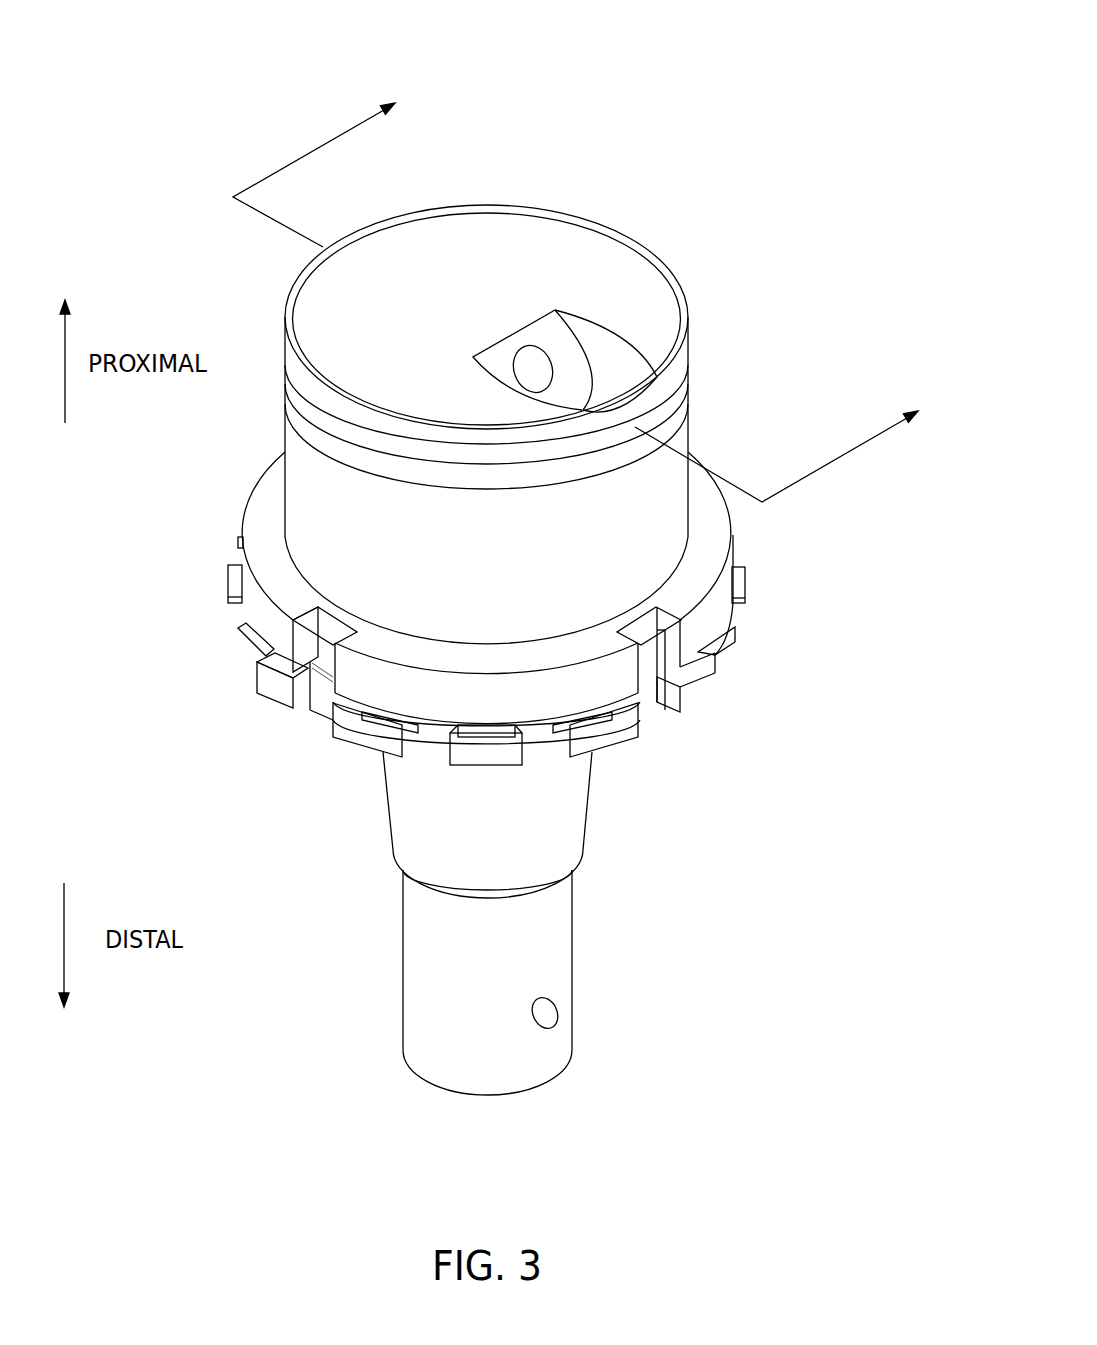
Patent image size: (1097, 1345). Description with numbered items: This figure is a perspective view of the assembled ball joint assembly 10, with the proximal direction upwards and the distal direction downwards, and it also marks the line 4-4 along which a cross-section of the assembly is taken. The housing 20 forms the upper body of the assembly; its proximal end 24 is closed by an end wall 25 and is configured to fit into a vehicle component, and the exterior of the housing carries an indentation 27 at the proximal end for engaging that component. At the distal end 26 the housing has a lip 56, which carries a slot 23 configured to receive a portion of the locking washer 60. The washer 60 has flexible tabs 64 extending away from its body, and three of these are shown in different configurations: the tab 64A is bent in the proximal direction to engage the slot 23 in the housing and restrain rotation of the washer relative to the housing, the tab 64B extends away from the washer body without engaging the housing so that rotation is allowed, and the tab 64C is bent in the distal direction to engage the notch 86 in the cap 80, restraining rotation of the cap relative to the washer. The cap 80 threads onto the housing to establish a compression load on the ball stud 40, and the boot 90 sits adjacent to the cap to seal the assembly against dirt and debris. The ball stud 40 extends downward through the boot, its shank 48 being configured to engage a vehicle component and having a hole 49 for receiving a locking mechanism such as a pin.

The ball joint assembly 10 is at (718, 61).
The line 4- 4 is at (586, 291).
The housing 20 is at (224, 427).
The proximal end 24 is at (671, 221).
The end wall 25 is at (533, 222).
The indentation 27 is at (592, 424).
The lip 56 is at (253, 513).
The distal end 26 is at (760, 552).
The locking washer 60 is at (205, 586).
The tab 64B is at (740, 590).
The slot 23 is at (648, 623).
The tab 64 is at (745, 658).
The tab 64A is at (657, 657).
The tab 64C is at (317, 697).
The cap 80 is at (245, 705).
The notch 86 is at (318, 731).
The boot 90 is at (655, 735).
The ball stud 40 is at (349, 843).
The shank 48 is at (413, 993).
The hole 49 is at (557, 1017).